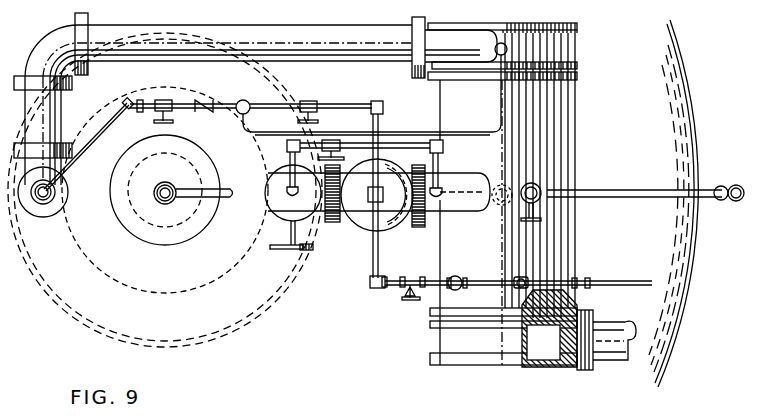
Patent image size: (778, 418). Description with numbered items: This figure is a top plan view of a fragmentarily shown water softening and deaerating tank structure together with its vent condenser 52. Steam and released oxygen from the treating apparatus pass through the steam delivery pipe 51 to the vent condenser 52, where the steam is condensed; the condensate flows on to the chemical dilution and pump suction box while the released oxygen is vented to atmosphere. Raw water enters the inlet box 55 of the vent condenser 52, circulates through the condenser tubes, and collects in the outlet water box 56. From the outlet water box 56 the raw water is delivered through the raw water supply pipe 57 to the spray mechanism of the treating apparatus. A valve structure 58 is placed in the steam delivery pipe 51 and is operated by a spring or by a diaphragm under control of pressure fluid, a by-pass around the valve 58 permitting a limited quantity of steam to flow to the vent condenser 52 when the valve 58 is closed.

The steam delivery pipe 51 is at (302, 200).
The vent condenser 52 is at (553, 174).
The inlet box 55 is at (455, 337).
The outlet water box 56 is at (563, 53).
The raw water supply pipe 57 is at (310, 57).
The valve structure 58 is at (389, 220).